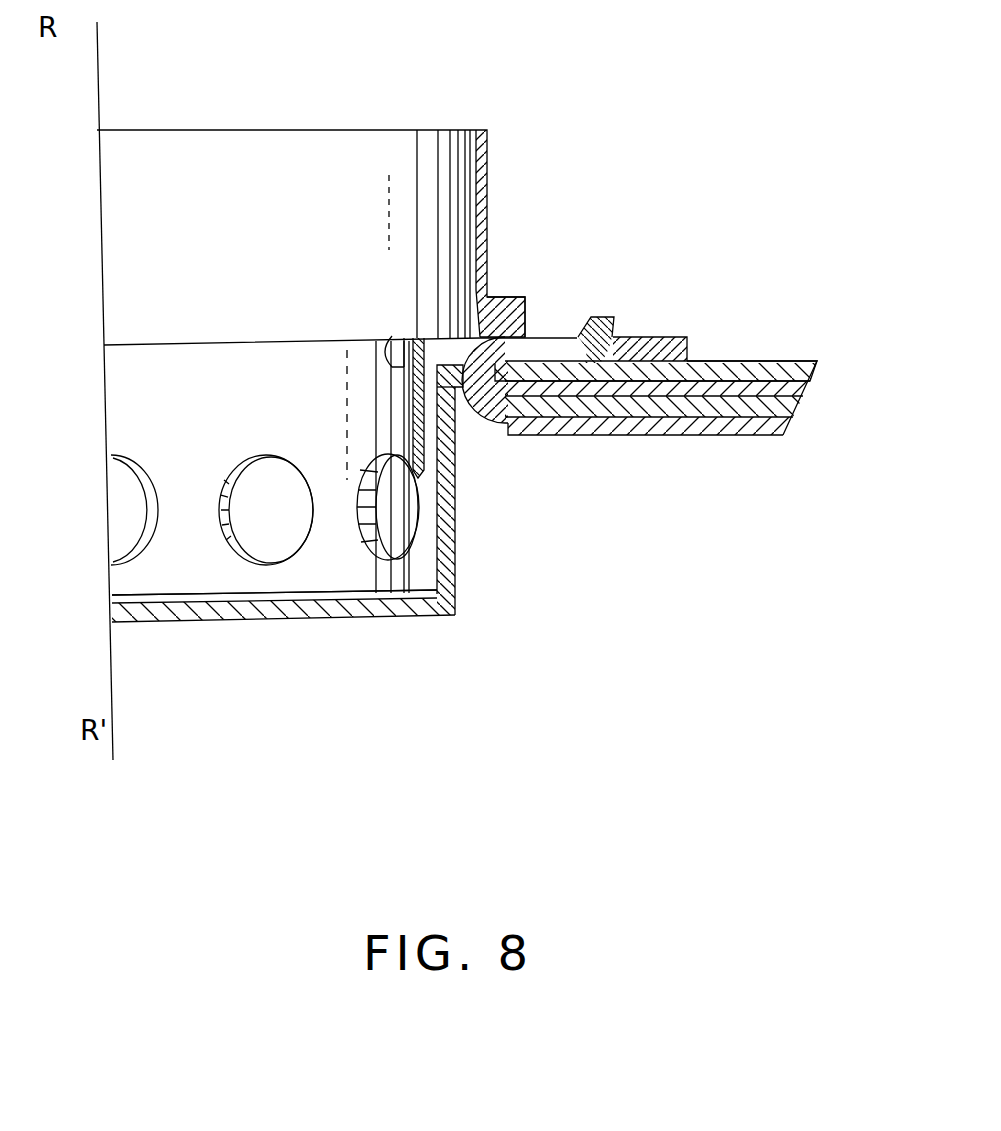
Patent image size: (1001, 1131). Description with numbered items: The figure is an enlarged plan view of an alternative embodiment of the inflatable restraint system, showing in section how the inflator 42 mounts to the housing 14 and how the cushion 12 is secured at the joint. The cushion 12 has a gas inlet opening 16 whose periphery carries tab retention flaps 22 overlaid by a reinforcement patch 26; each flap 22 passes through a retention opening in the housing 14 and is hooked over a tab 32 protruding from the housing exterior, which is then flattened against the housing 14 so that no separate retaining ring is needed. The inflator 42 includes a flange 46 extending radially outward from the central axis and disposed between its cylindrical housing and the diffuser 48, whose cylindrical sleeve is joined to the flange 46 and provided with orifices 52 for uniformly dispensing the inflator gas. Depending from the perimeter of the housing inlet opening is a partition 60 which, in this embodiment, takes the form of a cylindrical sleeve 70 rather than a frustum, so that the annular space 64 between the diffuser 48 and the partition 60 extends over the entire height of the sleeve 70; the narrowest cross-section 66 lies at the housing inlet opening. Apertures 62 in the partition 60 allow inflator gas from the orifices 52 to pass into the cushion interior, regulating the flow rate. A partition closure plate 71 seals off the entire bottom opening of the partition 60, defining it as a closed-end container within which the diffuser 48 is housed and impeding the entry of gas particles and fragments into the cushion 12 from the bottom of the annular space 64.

The cushion 12 is at (685, 379).
The housing 14 is at (765, 357).
The gas inlet opening 16 is at (620, 425).
The tab retention flaps 22 is at (675, 337).
The reinforcement patch 26 is at (820, 373).
The tabs 32 is at (605, 318).
The inflator 42 is at (409, 128).
The flange 46 is at (500, 322).
The diffuser 48 is at (135, 432).
The orifices 52 is at (265, 460).
The partition 60 is at (458, 580).
The apertures 62 is at (455, 537).
The annular space 64 is at (430, 509).
The narrowest cross-section 66 is at (400, 345).
The cylindrical sleeve 70 is at (422, 393).
The partition closure plate 71 is at (365, 620).